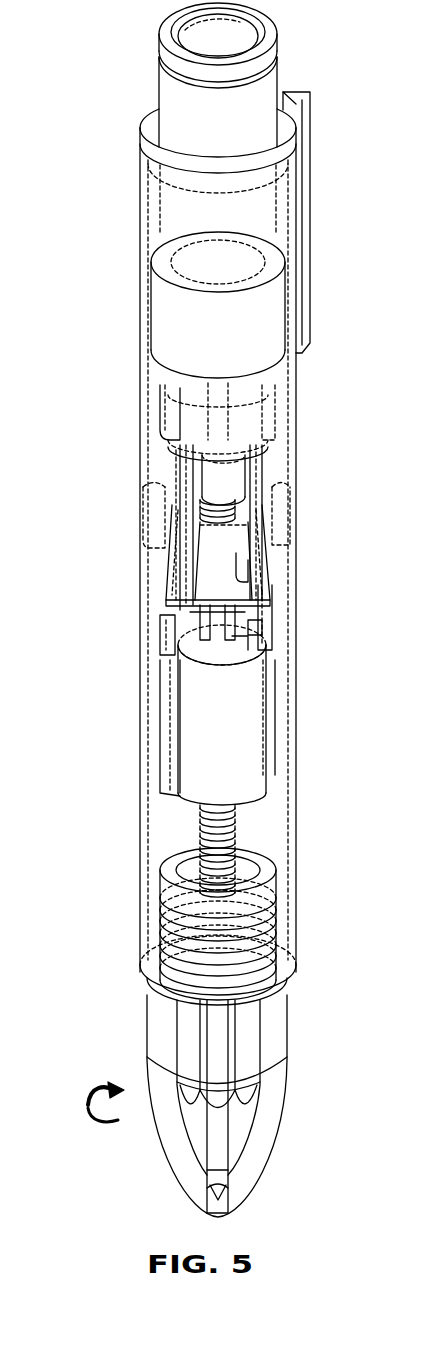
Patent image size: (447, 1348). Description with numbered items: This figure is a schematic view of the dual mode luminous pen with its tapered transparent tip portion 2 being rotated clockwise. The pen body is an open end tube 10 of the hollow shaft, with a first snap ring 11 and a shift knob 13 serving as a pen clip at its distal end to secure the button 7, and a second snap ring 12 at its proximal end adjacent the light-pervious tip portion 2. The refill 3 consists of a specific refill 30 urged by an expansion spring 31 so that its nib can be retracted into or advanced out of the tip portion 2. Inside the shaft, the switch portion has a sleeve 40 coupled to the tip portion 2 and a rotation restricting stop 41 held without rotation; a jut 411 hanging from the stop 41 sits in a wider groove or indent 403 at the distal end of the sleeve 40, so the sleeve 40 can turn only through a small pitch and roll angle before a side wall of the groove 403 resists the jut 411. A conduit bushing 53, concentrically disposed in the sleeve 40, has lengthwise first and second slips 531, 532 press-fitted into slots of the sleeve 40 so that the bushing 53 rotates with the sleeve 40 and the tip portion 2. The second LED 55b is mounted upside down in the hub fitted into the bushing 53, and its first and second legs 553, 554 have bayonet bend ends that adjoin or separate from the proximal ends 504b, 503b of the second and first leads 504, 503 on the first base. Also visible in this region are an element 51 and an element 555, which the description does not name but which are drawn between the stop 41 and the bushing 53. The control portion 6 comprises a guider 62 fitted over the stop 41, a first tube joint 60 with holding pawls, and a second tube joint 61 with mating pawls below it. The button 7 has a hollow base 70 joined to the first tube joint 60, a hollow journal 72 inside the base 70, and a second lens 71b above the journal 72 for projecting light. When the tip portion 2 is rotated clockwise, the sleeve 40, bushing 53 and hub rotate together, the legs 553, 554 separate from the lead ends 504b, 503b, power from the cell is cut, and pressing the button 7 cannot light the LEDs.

The tapered transparent tip portion 2 is at (270, 1110).
The refill 3 is at (352, 885).
The control portion 6 is at (78, 250).
The button 7 is at (78, 10).
The open end tube 10 is at (138, 792).
The first snap ring 11 is at (147, 142).
The second snap ring 12 is at (145, 957).
The shift knob 13 is at (293, 99).
The specific refill 30 is at (213, 1035).
The expansion spring 31 is at (245, 883).
The sleeve 40 is at (283, 783).
The rotation restricting stop 41 is at (157, 465).
The plunger 51 is at (233, 472).
The conduit bushing 53 is at (203, 712).
The second LED 55b is at (240, 645).
The first tube joint 60 is at (175, 253).
The second tube joint 61 is at (192, 408).
The guider 62 is at (157, 320).
The base 70 is at (168, 107).
The second lens 71b is at (165, 22).
The hollow journal 72 is at (172, 55).
The groove or indent 403 is at (163, 518).
The jut 411 is at (272, 533).
The first lead 503 is at (253, 487).
The proximal end of first lead 503b is at (248, 573).
The second lead 504 is at (180, 480).
The proximal end of second lead 504b is at (168, 623).
The first slip 531 is at (165, 730).
The second slip 532 is at (253, 627).
The first leg 553 is at (197, 617).
The second leg 554 is at (267, 617).
The return spring 555 is at (232, 498).